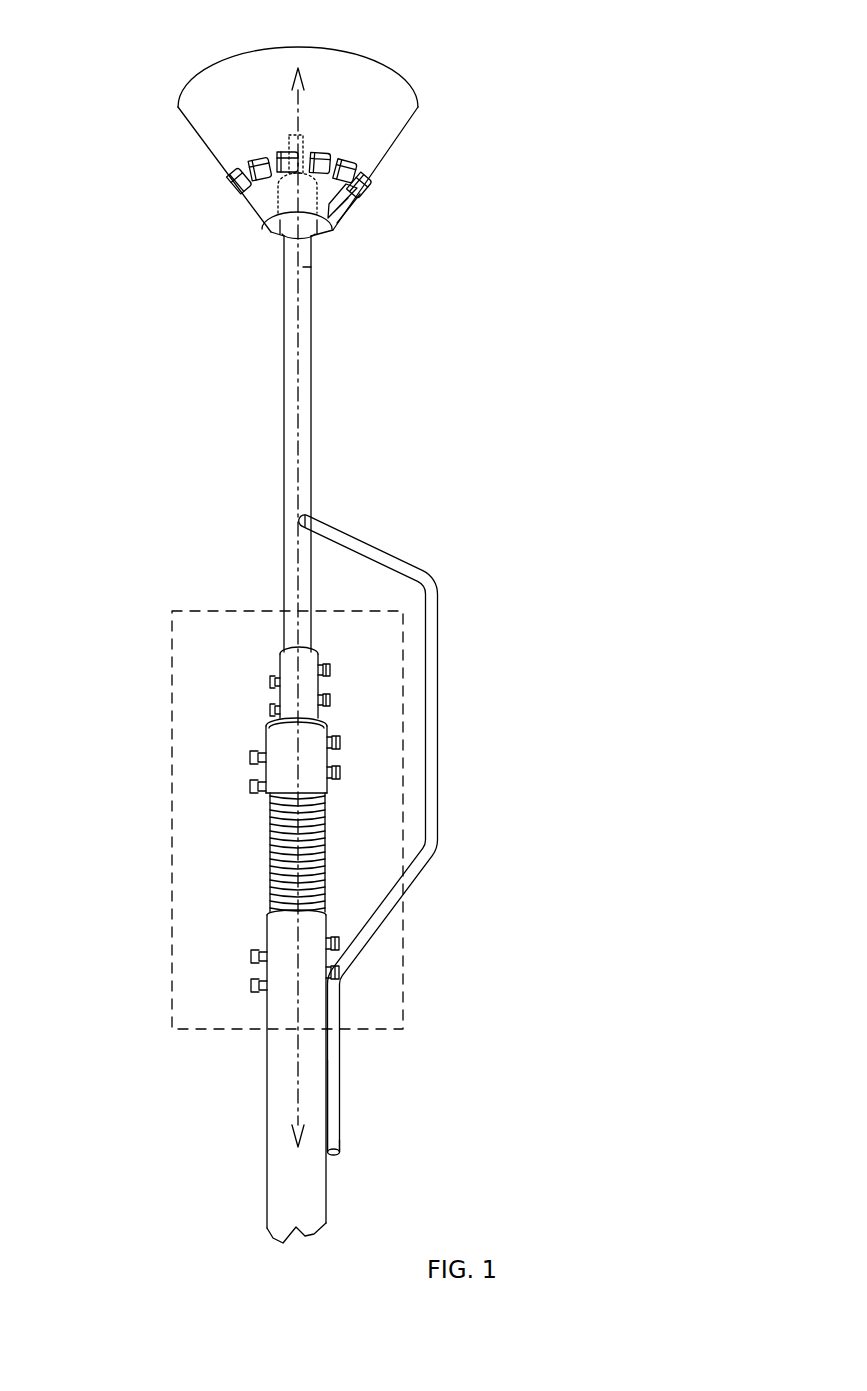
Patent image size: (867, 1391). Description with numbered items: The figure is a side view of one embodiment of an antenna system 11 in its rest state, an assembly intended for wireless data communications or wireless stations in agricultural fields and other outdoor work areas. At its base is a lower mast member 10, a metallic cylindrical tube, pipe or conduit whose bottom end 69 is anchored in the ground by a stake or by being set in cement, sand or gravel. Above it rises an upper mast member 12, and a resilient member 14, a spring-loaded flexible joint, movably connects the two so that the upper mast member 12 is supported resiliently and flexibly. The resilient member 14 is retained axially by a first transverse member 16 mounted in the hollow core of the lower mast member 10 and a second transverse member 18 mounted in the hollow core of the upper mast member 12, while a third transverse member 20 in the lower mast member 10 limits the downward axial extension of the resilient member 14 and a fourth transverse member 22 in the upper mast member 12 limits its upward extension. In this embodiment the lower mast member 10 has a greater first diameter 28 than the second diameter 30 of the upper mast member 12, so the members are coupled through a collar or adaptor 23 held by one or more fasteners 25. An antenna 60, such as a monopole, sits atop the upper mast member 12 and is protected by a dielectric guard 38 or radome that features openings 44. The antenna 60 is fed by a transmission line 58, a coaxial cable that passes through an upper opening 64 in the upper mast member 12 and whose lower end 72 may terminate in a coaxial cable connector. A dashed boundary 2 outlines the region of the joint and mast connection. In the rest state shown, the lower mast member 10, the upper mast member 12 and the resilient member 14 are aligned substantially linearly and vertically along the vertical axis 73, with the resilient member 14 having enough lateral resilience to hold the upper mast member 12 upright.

The coupling assembly 2 is at (360, 609).
The lower mast member 10 is at (267, 1108).
The antenna system 11 is at (60, 416).
The upper mast member 12 is at (284, 497).
The resilient member 14 is at (328, 853).
The first transverse member 16 is at (250, 987).
The second transverse member 18 is at (250, 758).
The third transverse member 20 is at (250, 960).
The fourth transverse member 22 is at (250, 785).
The adaptor 23 is at (296, 684).
The fasteners 25 is at (323, 700).
The first diameter 28 is at (380, 1173).
The second diameter 30 is at (362, 349).
The dielectric guard 38 is at (203, 162).
The openings 44 is at (318, 163).
The transmission line 58 is at (430, 570).
The antenna 60 is at (290, 137).
The upper opening 64 is at (307, 515).
The bottom end 69 is at (327, 1197).
The lower end 72 is at (333, 1110).
The vertical axis 73 is at (303, 267).